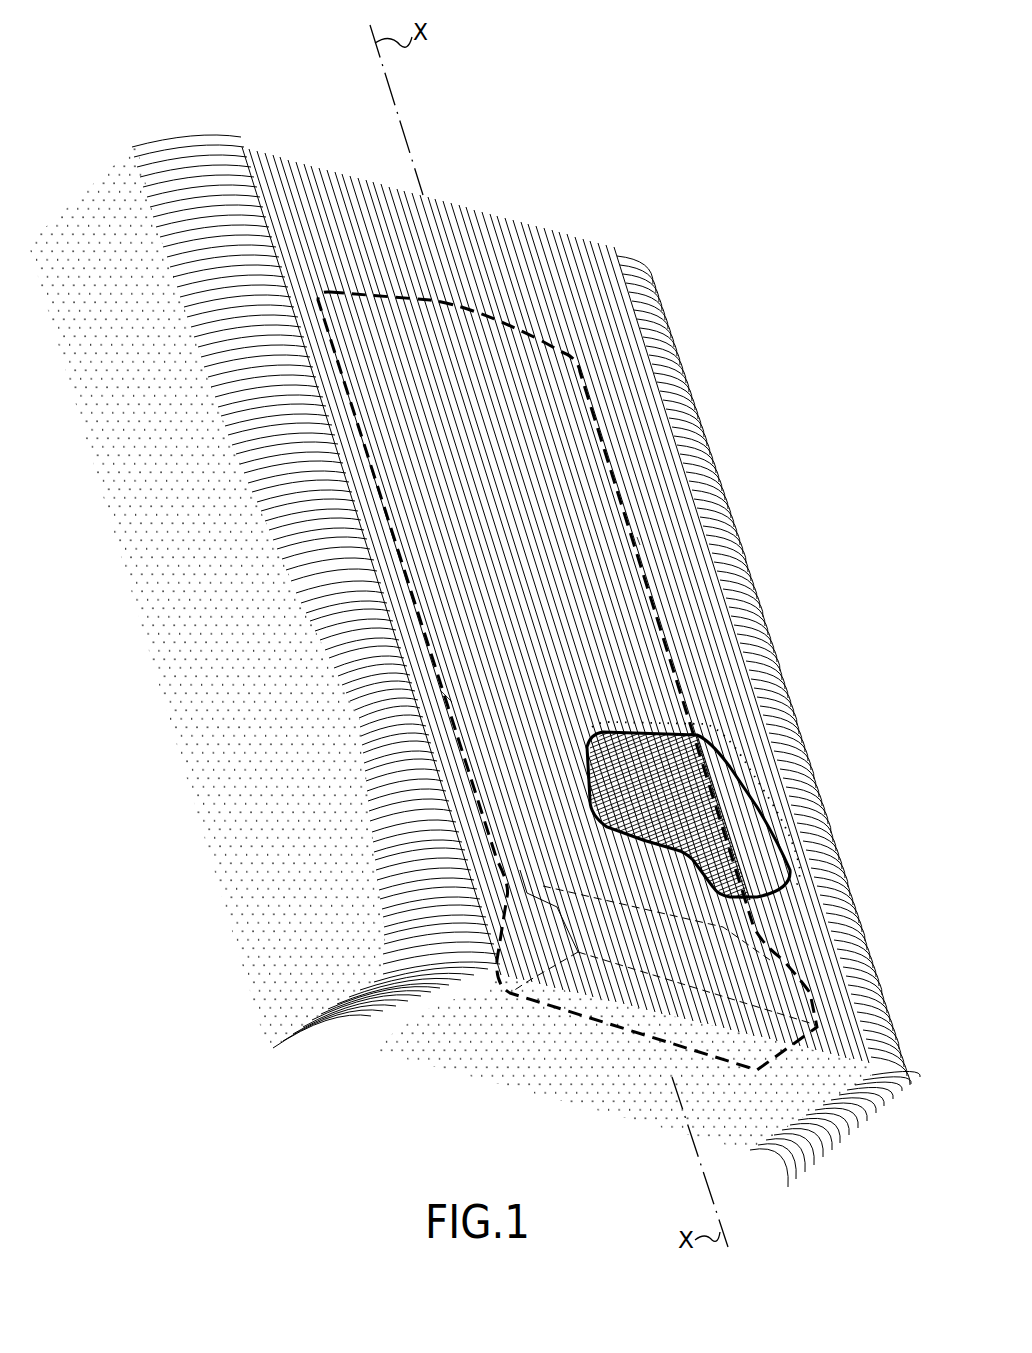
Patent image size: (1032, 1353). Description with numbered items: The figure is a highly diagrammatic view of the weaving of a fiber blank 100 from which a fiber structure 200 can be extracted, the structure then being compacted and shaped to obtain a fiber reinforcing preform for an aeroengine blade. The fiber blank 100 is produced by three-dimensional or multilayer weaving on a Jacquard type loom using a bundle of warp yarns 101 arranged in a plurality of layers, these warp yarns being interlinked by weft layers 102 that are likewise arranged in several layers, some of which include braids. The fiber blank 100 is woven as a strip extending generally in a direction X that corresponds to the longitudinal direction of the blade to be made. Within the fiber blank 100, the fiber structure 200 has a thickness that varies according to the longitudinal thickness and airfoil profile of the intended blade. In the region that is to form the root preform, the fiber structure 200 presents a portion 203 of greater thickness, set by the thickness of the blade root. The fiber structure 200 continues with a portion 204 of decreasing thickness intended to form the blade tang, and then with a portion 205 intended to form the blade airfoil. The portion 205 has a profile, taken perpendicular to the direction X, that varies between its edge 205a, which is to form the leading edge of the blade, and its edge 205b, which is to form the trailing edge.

The fiber blank 100 is at (474, 616).
The warp yarns 101 is at (286, 150).
The weft layers 102 is at (262, 1060).
The fiber structure 200 is at (693, 797).
The portion of greater thickness 203 is at (527, 883).
The portion of decreasing thickness 204 is at (545, 886).
The airfoil portion 205 is at (457, 681).
The leading edge 205a is at (440, 688).
The trailing edge 205b is at (637, 537).